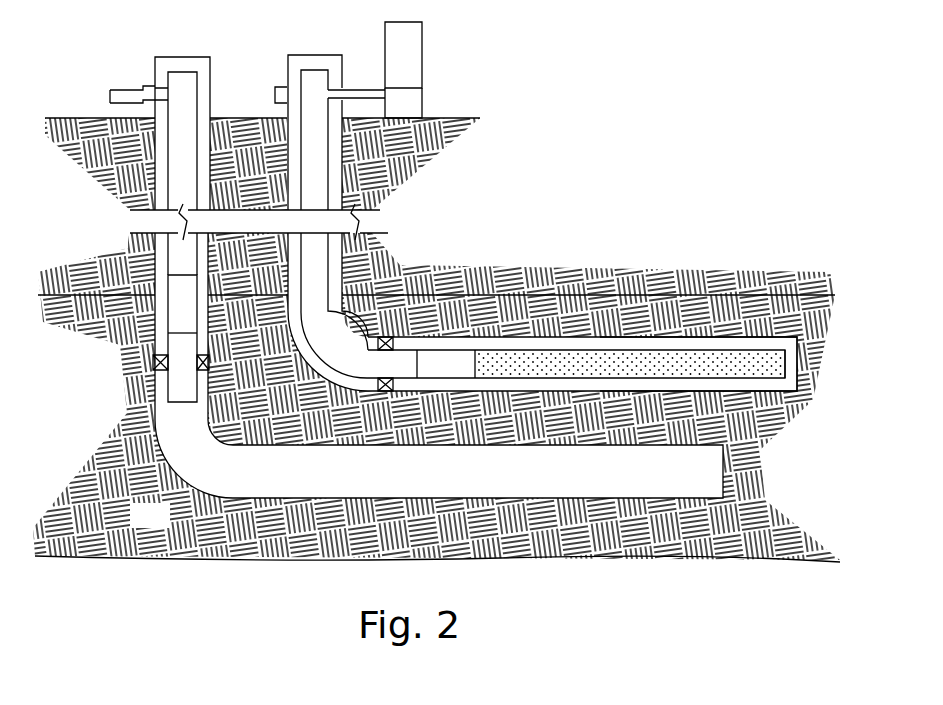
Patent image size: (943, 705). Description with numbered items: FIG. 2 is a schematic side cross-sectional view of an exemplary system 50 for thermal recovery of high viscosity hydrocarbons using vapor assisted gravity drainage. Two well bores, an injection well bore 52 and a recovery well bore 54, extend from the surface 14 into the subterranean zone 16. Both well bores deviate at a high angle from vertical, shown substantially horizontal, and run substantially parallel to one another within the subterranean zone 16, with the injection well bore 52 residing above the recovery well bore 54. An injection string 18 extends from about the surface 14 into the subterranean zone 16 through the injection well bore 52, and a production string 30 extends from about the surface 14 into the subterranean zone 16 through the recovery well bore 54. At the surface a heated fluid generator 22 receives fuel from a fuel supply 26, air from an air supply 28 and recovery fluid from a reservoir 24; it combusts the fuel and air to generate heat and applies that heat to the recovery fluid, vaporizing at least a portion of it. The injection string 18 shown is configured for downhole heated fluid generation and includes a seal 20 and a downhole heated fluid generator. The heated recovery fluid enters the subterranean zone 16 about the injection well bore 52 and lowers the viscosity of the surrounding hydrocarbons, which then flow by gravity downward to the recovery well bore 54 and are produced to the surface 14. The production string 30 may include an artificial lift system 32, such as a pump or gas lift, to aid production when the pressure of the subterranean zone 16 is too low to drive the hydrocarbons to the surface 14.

The surface 14 is at (97, 117).
The subterranean zone 16 is at (168, 526).
The injection string 18 is at (318, 268).
The seal 20 is at (452, 337).
The heated fluid generator 22 is at (443, 357).
The reservoir 24 is at (422, 103).
The fuel supply 26 is at (422, 68).
The air supply 28 is at (422, 37).
The production string 30 is at (178, 254).
The artificial lift system 32 is at (177, 316).
The system 50 is at (606, 246).
The injection well bore 52 is at (705, 337).
The recovery well bore 54 is at (505, 473).